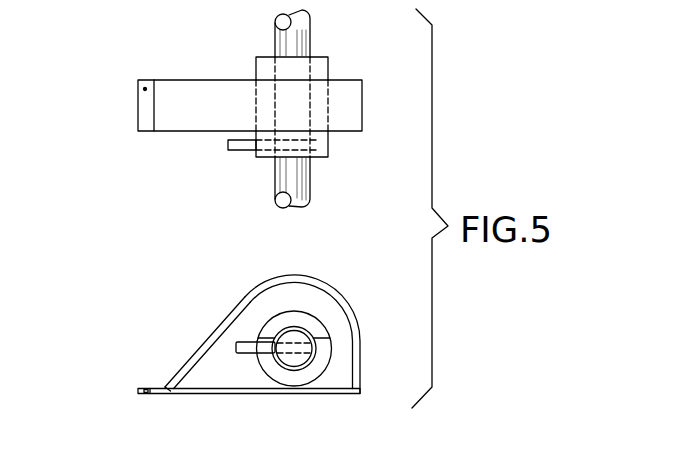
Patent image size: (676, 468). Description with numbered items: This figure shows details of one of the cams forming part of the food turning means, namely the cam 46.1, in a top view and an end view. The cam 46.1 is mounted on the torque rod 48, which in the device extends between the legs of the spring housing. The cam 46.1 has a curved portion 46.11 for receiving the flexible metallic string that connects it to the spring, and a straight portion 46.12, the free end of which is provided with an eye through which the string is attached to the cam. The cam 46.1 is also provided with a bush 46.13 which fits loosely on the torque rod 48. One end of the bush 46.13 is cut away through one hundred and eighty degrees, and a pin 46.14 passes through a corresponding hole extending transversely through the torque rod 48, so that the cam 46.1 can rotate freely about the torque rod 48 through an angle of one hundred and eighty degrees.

The cam 46.1 is at (88, 154).
The curved portion 46.11 is at (197, 88).
The straight portion 46.12 is at (210, 394).
The bush 46.13 is at (317, 144).
The pin 46.14 is at (230, 150).
The torque rod 48 is at (302, 34).